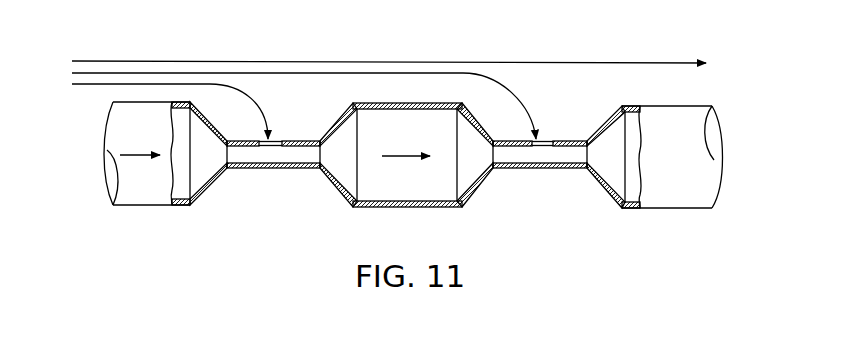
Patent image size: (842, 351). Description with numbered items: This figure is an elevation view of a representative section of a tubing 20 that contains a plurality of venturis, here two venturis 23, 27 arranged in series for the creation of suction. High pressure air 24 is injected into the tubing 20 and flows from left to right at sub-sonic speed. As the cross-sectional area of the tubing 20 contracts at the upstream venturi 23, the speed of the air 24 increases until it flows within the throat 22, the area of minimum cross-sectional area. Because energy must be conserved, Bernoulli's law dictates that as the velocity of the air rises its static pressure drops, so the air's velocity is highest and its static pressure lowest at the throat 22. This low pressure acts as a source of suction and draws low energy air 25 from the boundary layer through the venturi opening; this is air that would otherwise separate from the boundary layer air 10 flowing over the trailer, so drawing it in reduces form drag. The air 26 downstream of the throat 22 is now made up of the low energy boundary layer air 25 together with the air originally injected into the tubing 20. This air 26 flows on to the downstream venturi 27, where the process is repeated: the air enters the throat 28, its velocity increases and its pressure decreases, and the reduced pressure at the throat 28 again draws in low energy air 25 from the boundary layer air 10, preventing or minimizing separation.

The boundary layer air flow 10 is at (611, 61).
The tubing 20 is at (453, 120).
The throat 22 is at (245, 153).
The venturi 23 is at (282, 147).
The air 24 is at (134, 154).
The low energy air 25 is at (262, 110).
The air downstream of the throat 26 is at (400, 155).
The venturi 27 is at (550, 147).
The throat 28 is at (513, 155).